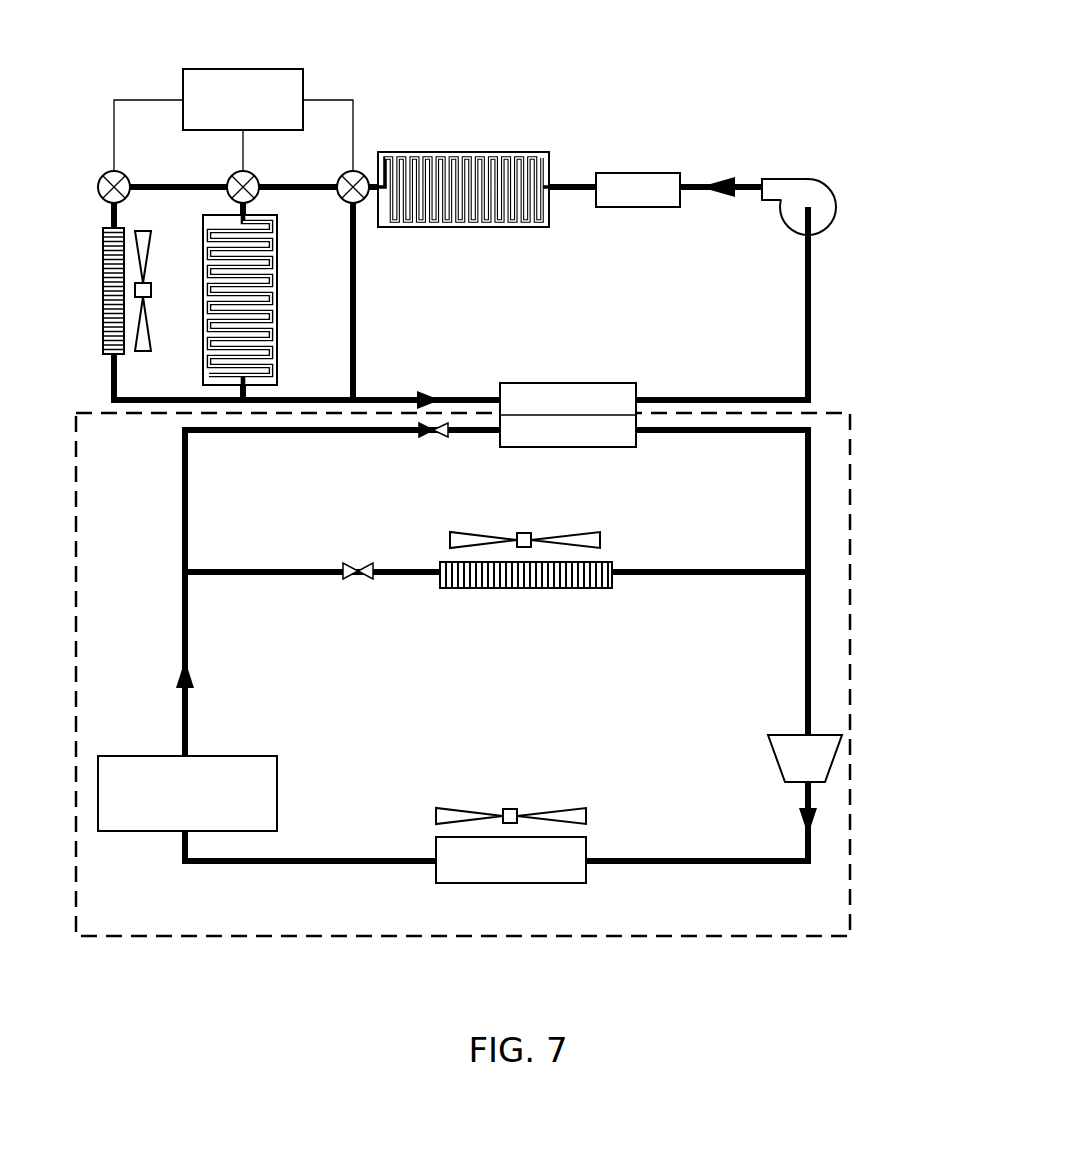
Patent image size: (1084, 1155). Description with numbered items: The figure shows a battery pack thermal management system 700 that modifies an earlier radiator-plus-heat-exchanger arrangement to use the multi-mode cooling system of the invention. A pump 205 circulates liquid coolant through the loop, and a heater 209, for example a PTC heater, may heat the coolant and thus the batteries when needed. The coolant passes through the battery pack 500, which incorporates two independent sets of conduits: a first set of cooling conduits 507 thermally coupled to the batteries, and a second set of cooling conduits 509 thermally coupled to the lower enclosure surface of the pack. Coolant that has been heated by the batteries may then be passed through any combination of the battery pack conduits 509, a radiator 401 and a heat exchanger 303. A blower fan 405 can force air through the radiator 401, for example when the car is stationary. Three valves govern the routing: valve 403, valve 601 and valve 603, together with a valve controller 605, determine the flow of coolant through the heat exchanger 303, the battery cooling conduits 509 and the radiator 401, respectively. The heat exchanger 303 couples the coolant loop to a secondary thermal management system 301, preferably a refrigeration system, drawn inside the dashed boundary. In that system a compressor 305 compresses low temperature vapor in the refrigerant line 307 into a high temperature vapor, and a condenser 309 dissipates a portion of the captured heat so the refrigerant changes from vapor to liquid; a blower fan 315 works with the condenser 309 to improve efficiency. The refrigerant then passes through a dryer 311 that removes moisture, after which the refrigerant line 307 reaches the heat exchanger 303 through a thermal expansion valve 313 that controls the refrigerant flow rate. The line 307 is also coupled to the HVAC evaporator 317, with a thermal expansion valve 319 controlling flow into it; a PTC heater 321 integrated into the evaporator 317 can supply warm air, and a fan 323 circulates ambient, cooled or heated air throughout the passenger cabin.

The thermal management system 700 is at (849, 100).
The valve controller 605 is at (248, 69).
The valve 603 is at (123, 176).
The valve 601 is at (251, 176).
The valve 403 is at (341, 196).
The battery pack 500 is at (381, 252).
The first set of cooling conduits 507 is at (473, 177).
The second set of cooling conduits 509 is at (274, 300).
The heater 209 is at (622, 173).
The pump 205 is at (785, 192).
The radiator 401 is at (113, 337).
The blower fan 405 is at (151, 290).
The secondary thermal management system 301 is at (853, 543).
The heat exchanger 303 is at (543, 383).
The thermal expansion valve 313 is at (422, 437).
The HVAC evaporator 317 is at (497, 571).
The thermal expansion valve 319 is at (350, 578).
The PTC heater 321 is at (480, 588).
The fan 323 is at (524, 532).
The dryer 311 is at (248, 756).
The compressor 305 is at (775, 748).
The refrigerant line 307 is at (698, 865).
The condenser 309 is at (586, 852).
The blower fan 315 is at (505, 810).